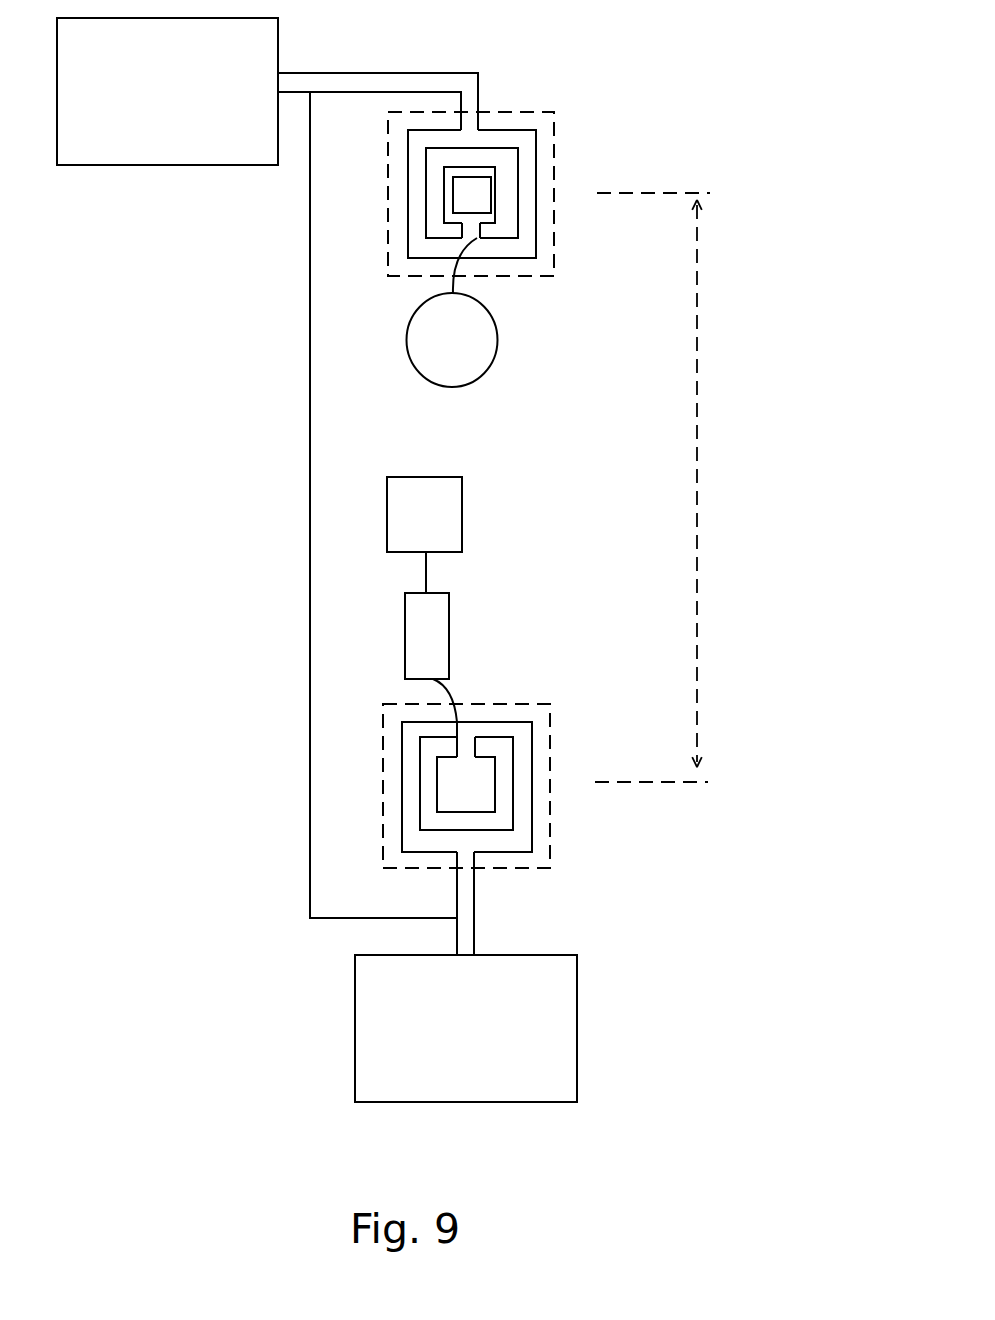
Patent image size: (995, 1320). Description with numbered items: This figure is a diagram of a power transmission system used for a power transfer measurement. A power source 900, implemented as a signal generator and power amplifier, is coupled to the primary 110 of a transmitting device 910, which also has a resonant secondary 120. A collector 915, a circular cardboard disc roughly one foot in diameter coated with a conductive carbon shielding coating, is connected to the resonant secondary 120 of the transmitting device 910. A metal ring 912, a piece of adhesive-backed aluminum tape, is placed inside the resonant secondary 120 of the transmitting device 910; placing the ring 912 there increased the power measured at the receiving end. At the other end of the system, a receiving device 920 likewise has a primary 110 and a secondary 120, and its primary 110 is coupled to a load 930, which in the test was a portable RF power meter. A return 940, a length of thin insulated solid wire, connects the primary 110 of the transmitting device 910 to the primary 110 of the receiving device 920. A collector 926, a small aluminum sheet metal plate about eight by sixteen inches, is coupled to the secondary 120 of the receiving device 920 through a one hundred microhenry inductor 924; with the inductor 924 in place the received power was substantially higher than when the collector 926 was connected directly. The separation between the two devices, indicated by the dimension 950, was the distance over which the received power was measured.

The power source 900 is at (167, 91).
The transmitting device 910 is at (578, 99).
The primary 110 is at (548, 174).
The resonant secondary 120 is at (536, 257).
The metal ring 912 is at (499, 208).
The collector 915 is at (504, 346).
The receiving device 920 is at (563, 695).
The inductor 924 is at (459, 630).
The collector 926 is at (472, 525).
The load 930 is at (466, 1028).
The return 940 is at (302, 474).
The separation distance 950 is at (724, 352).